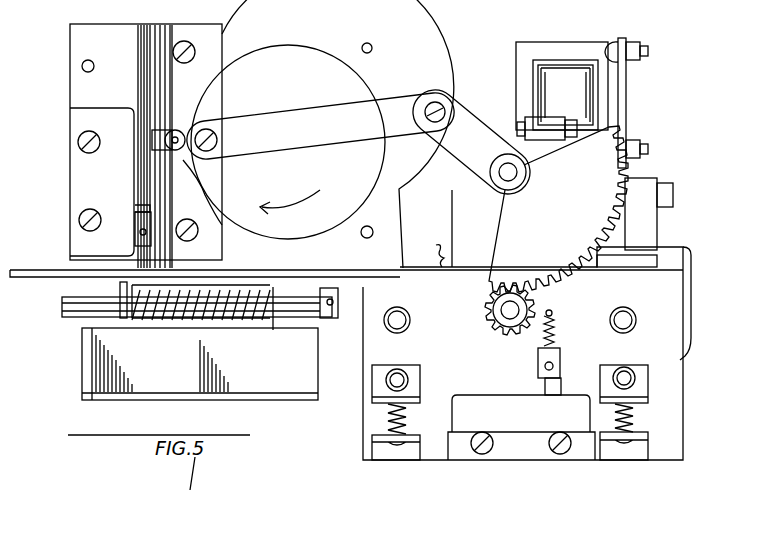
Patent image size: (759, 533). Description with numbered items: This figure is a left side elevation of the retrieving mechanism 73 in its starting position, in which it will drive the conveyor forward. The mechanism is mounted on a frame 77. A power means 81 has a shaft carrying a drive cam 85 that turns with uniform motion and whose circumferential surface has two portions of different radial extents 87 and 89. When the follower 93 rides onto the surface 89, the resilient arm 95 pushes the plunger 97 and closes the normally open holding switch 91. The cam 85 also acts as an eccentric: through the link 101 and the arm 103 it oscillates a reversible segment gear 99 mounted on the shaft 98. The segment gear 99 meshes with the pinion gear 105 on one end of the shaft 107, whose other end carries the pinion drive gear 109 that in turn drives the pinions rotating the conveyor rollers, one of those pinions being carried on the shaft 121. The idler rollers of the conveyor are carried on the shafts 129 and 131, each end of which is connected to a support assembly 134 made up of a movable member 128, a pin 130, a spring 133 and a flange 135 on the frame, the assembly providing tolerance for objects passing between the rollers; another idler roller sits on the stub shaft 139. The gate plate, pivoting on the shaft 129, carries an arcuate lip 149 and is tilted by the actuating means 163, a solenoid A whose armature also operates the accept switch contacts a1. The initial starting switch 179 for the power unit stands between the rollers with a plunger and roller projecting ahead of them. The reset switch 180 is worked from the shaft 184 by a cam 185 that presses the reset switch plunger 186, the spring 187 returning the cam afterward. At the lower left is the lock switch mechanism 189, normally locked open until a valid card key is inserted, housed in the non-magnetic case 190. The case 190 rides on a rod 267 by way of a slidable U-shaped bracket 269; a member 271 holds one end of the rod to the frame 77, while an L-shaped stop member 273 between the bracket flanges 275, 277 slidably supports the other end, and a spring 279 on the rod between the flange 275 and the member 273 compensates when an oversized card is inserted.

The retrieving mechanism 73 is at (403, 74).
The frame 77 is at (23, 270).
The power means 81 is at (352, 42).
The drive cam 85 is at (270, 52).
The circumferential surface of first radial extent 87 is at (202, 190).
The circumferential surface of second radial extent 89 is at (236, 234).
The holding switch 91 is at (80, 122).
The follower 93 is at (185, 128).
The resilient arm 95 is at (155, 164).
The plunger 97 is at (137, 208).
The shaft 98 is at (506, 168).
The reversible segment gear 99 is at (500, 235).
The link 101 is at (282, 120).
The arm 103 is at (463, 106).
The pinion gear 105 is at (490, 303).
The shaft 107 is at (502, 313).
The pinion drive gear 109 is at (438, 246).
The shaft 121 is at (410, 296).
The movable member 128 is at (420, 390).
The shaft 129 is at (625, 368).
The pin 130 is at (387, 418).
The shaft 131 is at (398, 370).
The spring 133 is at (408, 418).
The support assembly 134 is at (405, 459).
The flange 135 is at (376, 452).
The stub shaft 139 is at (636, 296).
The arcuate lip 149 is at (692, 350).
The actuating means 163 is at (513, 62).
The solenoid A is at (541, 50).
The accept switch contacts a1 is at (552, 125).
The initial starting switch 179 is at (640, 190).
The reset switch 180 is at (526, 452).
The shaft 184 is at (538, 365).
The cam 185 is at (560, 352).
The reset switch plunger 186 is at (560, 376).
The spring 187 is at (556, 330).
The lock switch mechanism 189 is at (75, 386).
The case 190 is at (82, 352).
The rod 267 is at (74, 318).
The U-shaped bracket 269 is at (265, 322).
The member 271 is at (320, 318).
The L-shaped stop member 273 is at (163, 290).
The flange 275 is at (278, 305).
The flange 277 is at (120, 291).
The spring 279 is at (180, 320).